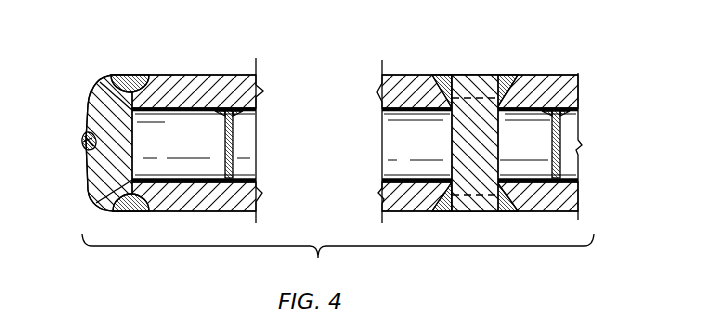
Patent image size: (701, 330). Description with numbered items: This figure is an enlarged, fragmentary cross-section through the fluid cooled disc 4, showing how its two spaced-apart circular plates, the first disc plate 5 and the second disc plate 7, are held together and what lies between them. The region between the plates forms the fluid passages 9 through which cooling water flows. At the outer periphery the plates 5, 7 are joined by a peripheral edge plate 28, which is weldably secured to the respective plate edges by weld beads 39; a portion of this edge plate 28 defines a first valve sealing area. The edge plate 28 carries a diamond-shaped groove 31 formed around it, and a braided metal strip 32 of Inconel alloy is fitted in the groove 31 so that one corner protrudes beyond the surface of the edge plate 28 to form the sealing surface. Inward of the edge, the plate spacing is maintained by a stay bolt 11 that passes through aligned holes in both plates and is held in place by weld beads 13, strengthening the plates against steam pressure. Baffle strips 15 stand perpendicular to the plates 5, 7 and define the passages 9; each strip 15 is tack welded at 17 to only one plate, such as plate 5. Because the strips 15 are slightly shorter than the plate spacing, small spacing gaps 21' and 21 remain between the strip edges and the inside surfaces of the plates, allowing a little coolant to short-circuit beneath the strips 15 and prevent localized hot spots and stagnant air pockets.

The fluid cooled disc 4 is at (414, 70).
The first disc plate 5 is at (178, 75).
The second disc plate 7 is at (188, 212).
The fluid passages 9 is at (152, 146).
The stay bolt 11 is at (504, 146).
The weld bead 13 is at (445, 76).
The baffle strip 15 is at (226, 150).
The tack weld 17 is at (240, 112).
The spacing gap 21 is at (384, 160).
The spacing gap 21' is at (363, 70).
The peripheral edge plate 28 is at (84, 130).
The diamond-shaped groove 31 is at (100, 125).
The braided metal strip 32 is at (86, 146).
The weld bead 39 is at (135, 75).